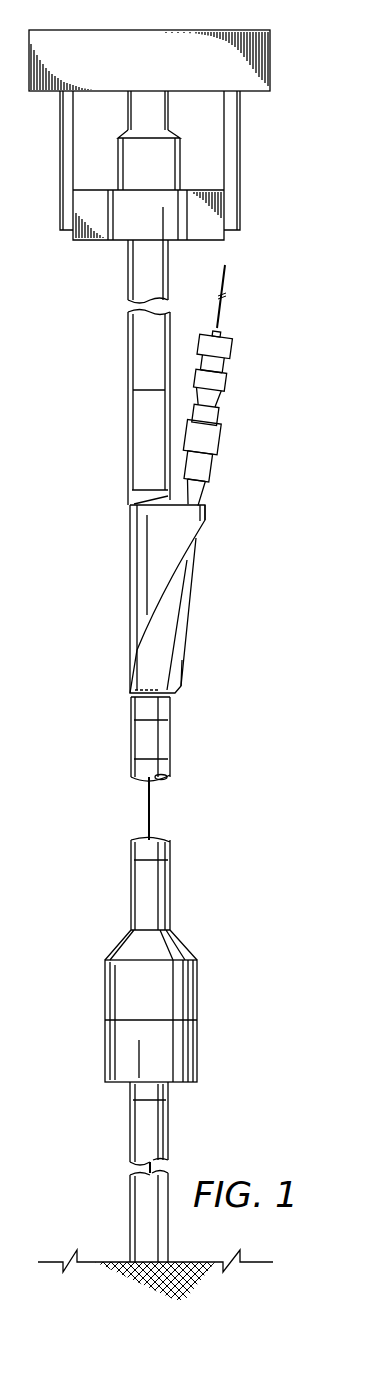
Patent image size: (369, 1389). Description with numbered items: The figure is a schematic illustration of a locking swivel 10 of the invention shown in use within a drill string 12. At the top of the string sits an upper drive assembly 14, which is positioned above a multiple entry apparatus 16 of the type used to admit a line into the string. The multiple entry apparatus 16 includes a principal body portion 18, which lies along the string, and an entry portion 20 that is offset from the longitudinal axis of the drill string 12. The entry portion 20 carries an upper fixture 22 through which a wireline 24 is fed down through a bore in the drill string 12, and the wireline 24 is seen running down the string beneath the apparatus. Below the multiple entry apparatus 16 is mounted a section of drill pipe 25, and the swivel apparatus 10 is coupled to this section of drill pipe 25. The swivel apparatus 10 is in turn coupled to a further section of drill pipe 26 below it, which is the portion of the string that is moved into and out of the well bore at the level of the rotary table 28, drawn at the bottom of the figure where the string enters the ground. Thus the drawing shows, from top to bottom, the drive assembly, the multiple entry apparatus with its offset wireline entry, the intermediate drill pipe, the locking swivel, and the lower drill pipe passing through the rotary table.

The locking swivel 10 is at (105, 1048).
The drill string 12 is at (108, 741).
The upper drive assembly 14 is at (272, 60).
The multiple entry apparatus 16 is at (128, 592).
The principal body portion 18 is at (163, 632).
The entry portion 20 is at (207, 508).
The upper fixture 22 is at (224, 368).
The wireline 24 is at (224, 283).
The section of drill pipe 25 is at (161, 780).
The section of drill pipe 26 is at (130, 1130).
The rotary table 28 is at (108, 1260).